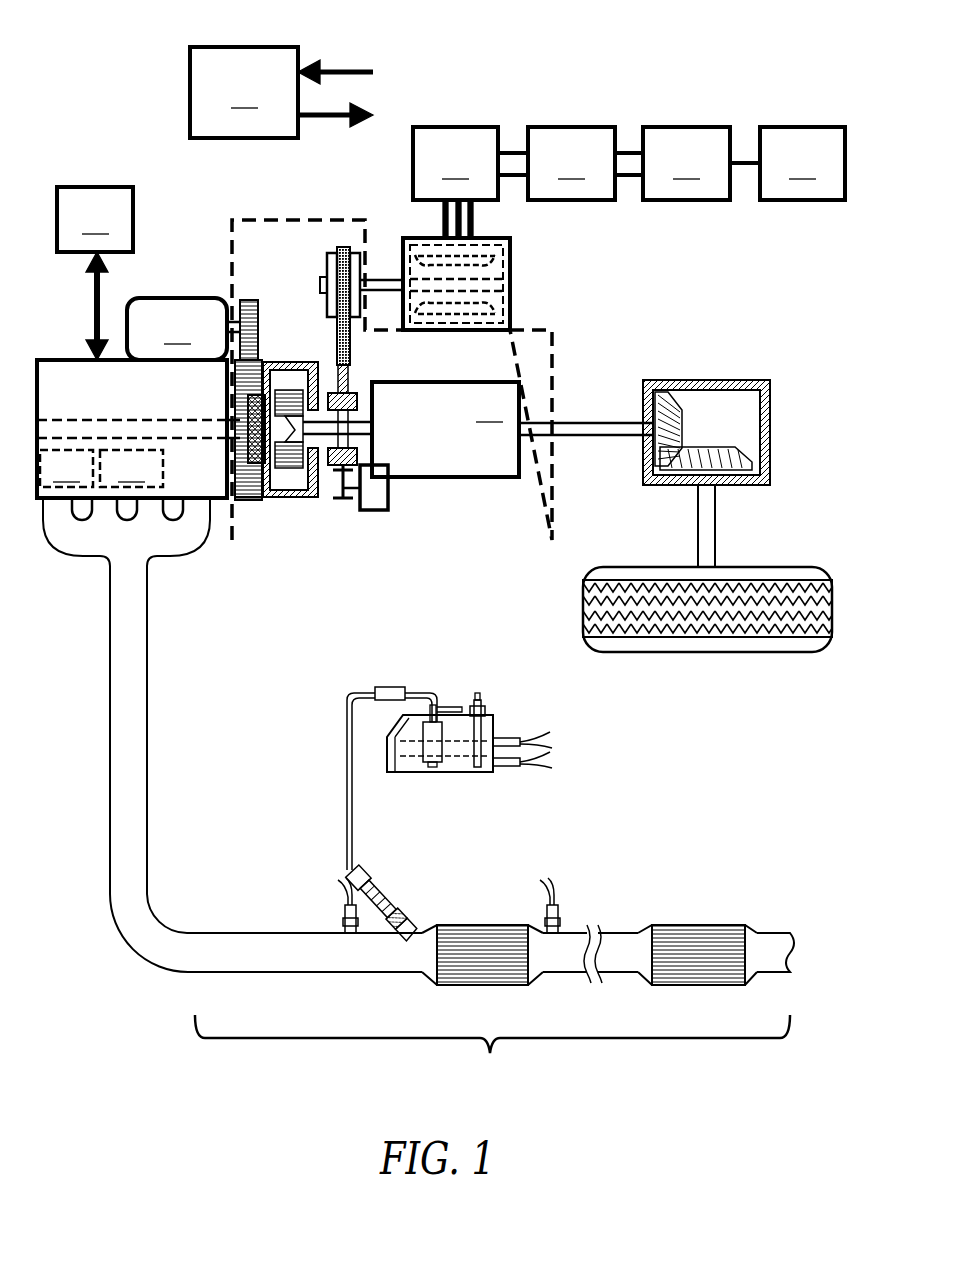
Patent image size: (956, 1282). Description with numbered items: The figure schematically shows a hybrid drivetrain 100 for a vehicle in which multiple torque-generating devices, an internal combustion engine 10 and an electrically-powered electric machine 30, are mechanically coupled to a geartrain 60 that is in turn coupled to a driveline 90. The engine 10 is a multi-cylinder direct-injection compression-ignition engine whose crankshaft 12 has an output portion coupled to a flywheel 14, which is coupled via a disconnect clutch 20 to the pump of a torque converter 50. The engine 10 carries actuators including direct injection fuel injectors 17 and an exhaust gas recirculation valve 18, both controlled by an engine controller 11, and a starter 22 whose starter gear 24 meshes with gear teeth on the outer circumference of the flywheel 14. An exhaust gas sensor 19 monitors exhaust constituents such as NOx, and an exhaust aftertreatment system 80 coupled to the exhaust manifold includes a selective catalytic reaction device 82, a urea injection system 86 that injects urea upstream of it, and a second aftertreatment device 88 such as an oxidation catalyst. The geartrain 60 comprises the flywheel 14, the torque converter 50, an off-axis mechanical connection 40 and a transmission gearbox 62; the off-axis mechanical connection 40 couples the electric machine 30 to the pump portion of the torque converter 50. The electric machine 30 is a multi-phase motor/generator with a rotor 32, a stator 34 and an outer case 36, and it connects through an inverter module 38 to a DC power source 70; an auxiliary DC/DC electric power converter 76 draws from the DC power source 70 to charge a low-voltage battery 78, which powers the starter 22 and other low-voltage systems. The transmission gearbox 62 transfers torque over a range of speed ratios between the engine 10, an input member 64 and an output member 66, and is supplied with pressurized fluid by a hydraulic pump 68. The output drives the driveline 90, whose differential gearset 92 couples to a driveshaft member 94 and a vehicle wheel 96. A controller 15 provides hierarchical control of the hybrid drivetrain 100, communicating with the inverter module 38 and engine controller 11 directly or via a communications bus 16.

The internal combustion engine 10 is at (129, 439).
The engine controller 11 is at (95, 273).
The crankshaft 12 is at (170, 431).
The flywheel 14 is at (243, 500).
The controller 15 is at (244, 92).
The communications bus 16 is at (330, 90).
The direct injection fuel injectors 17 is at (66, 468).
The exhaust gas recirculation valve 18 is at (131, 468).
The exhaust gas sensor 19 is at (343, 912).
The disconnect clutch 20 is at (258, 470).
The starter 22 is at (177, 329).
The starter gear 24 is at (240, 300).
The electric machine 30 is at (513, 269).
The rotor 32 is at (488, 275).
The stator 34 is at (510, 320).
The outer case 36 is at (510, 296).
The inverter module 38 is at (455, 163).
The off-axis mechanical connection 40 is at (305, 272).
The torque converter 50 is at (290, 353).
The geartrain 60 is at (488, 548).
The transmission gearbox 62 is at (445, 429).
The input member 64 is at (372, 430).
The output member 66 is at (580, 438).
The hydraulic pump 68 is at (390, 494).
The DC power source 70 is at (571, 163).
The auxiliary DC/DC electric power converter 76 is at (686, 163).
The low-voltage battery 78 is at (802, 163).
The exhaust aftertreatment system 80 is at (452, 839).
The selective catalytic reaction device 82 is at (480, 925).
The urea injection system 86 is at (338, 792).
The second aftertreatment device 88 is at (700, 925).
The driveline 90 is at (739, 410).
The differential gearset 92 is at (700, 445).
The driveshaft member 94 is at (716, 500).
The vehicle wheel 96 is at (788, 567).
The hybrid drivetrain 100 is at (610, 104).